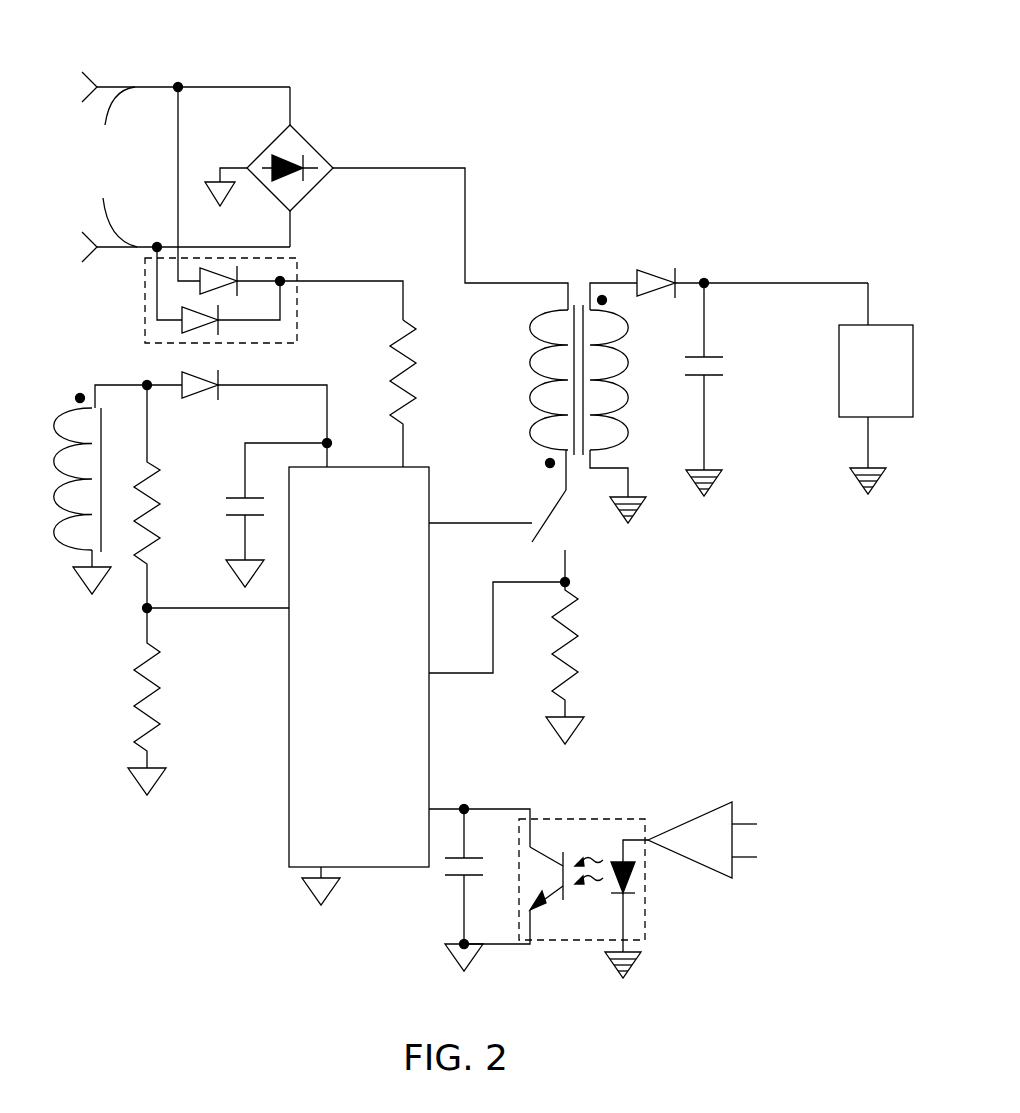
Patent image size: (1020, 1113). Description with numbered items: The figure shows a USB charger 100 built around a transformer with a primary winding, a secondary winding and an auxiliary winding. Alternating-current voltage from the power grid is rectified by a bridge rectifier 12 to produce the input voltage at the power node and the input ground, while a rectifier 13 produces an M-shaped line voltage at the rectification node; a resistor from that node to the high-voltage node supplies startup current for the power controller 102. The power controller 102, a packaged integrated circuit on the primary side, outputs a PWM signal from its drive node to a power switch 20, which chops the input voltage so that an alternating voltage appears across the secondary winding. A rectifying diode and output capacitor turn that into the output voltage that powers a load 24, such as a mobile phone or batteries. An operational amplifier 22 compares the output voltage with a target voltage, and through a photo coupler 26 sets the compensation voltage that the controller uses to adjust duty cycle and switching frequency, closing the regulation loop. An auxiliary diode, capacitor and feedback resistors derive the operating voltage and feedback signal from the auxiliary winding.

The USB charger 100 is at (468, 68).
The bridge rectifier 12 is at (300, 128).
The rectifier 13 is at (297, 314).
The power switch 20 is at (572, 521).
The operational amplifier 22 is at (712, 803).
The load 24 is at (890, 399).
The photo coupler 26 is at (585, 819).
The power controller 102 is at (352, 672).